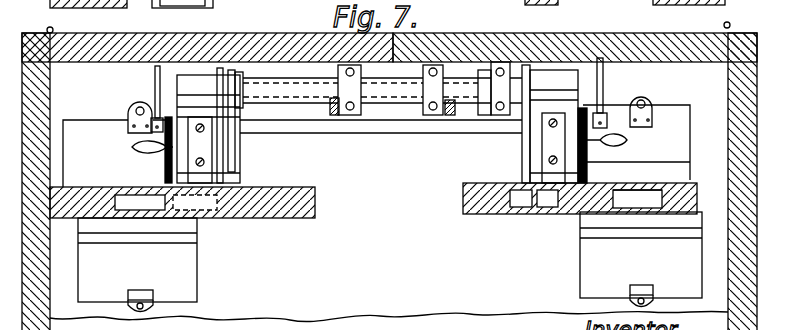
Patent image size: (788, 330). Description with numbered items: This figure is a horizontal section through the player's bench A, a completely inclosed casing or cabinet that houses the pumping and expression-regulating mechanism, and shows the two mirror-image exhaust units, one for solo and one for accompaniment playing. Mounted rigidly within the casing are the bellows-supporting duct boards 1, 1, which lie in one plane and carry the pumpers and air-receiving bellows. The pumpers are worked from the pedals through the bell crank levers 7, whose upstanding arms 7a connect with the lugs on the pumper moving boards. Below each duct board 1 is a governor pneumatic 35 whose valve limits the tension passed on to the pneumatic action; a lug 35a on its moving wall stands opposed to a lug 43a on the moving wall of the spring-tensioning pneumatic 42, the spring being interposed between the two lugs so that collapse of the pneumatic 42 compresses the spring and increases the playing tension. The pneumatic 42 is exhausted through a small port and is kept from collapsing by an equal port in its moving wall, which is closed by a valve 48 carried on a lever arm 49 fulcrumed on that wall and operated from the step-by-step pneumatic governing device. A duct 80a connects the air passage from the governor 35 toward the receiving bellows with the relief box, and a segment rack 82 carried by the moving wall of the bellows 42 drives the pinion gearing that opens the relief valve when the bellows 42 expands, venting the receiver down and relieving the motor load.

The bellows-supporting duct board 1 is at (293, 218).
The bell crank lever 7 is at (270, 90).
The upstanding arm of bell crank lever 7a is at (328, 88).
The governor pneumatic 35 is at (390, 257).
The lug on moving wall of governor pneumatic 35a is at (153, 306).
The spring-tensioning pneumatic 42 is at (263, 33).
The lug on moving wall of spring-tensioning pneumatic 43a is at (662, 93).
The valve 48 is at (132, 147).
The lever arm 49 is at (165, 181).
The duct 80a is at (525, 208).
The segment rack 82 is at (155, 80).
The player's bench A is at (301, 288).